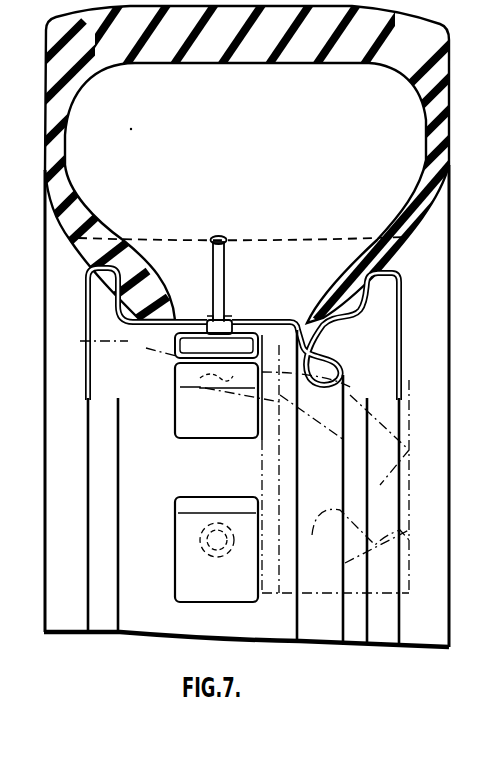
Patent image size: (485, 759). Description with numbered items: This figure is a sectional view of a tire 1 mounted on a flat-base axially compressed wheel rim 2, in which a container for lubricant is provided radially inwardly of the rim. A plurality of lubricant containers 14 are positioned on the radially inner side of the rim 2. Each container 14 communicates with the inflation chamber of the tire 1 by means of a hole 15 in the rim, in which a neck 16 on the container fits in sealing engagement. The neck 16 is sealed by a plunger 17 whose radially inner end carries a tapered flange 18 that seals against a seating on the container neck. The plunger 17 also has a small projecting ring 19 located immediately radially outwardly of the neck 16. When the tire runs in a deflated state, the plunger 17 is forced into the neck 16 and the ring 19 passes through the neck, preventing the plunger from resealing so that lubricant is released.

The tire 1 is at (72, 221).
The wheel rim 2 is at (133, 320).
The lubricant container 14 is at (186, 421).
The hole 15 is at (209, 315).
The neck 16 is at (233, 314).
The plunger 17 is at (218, 272).
The tapered flange 18 is at (177, 341).
The projecting ring 19 is at (230, 315).